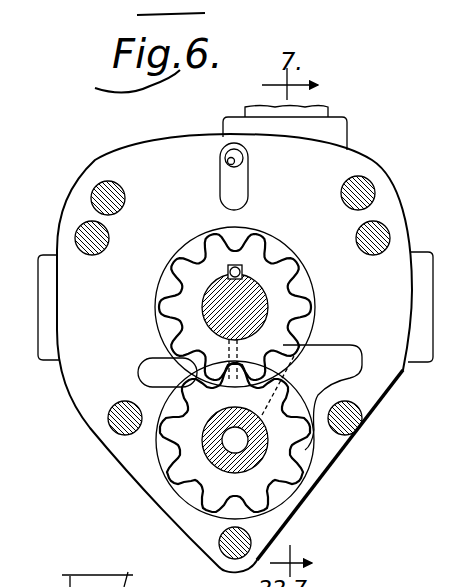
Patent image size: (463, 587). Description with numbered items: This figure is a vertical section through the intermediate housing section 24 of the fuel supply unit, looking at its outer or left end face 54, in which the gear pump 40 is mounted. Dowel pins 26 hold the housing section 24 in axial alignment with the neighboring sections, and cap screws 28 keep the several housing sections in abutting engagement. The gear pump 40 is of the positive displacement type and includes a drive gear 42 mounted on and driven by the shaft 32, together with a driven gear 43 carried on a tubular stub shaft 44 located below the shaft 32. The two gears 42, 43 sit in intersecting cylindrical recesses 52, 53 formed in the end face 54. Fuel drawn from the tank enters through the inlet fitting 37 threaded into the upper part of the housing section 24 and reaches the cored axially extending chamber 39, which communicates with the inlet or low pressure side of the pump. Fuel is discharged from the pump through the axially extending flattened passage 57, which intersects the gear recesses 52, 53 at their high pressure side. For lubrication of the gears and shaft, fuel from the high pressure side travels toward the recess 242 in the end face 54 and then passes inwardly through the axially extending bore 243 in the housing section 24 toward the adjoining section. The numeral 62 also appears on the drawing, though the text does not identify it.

The intermediate housing section 24 is at (122, 466).
The dowel pins 26 is at (78, 233).
The cap screws 28 is at (100, 185).
The shaft 32 is at (235, 322).
The inlet fitting 37 is at (333, 113).
The cored axially extending chamber 39 is at (348, 350).
The gear pump 40 is at (288, 234).
The drive gear 42 is at (190, 241).
The driven gear 43 is at (302, 447).
The tubular stub shaft 44 is at (218, 450).
The cylindrical recess 52 is at (313, 291).
The cylindrical recess 53 is at (302, 494).
The outer end face 54 is at (120, 348).
The flattened passage 57 is at (140, 374).
The gear teeth 62 is at (166, 281).
The recess 242 is at (244, 178).
The axially extending bore 243 is at (221, 156).